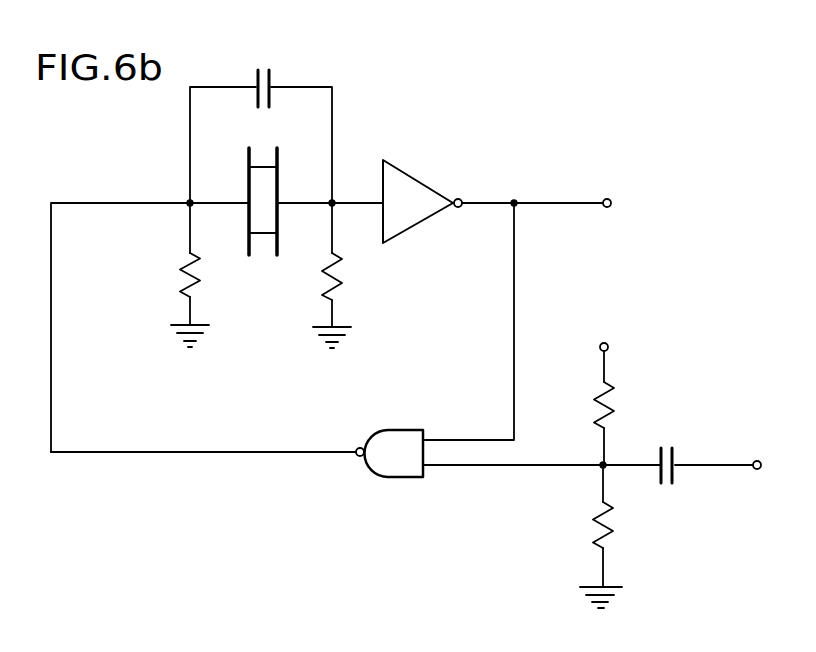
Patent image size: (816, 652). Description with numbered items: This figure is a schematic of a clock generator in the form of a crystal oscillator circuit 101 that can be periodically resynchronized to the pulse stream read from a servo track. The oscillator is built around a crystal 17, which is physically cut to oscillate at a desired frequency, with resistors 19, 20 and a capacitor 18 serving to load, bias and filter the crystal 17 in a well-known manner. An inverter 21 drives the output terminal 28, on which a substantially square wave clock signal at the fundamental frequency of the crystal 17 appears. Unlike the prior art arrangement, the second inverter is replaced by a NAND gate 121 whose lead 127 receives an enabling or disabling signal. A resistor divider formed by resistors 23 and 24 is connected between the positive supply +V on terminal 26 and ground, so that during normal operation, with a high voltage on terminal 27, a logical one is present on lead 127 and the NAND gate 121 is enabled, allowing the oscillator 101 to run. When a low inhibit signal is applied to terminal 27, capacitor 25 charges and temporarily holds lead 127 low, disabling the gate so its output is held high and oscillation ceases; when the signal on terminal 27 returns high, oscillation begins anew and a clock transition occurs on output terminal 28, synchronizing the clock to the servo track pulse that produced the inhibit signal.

The crystal oscillator circuit 101 is at (178, 461).
The crystal 17 is at (265, 237).
The capacitor 18 is at (271, 80).
The resistor 19 is at (186, 258).
The resistor 20 is at (338, 259).
The inverter 21 is at (418, 179).
The output terminal 28 is at (606, 198).
The NAND gate 121 is at (380, 478).
The lead 127 is at (505, 467).
The terminal 26 is at (609, 347).
The resistor 23 is at (610, 405).
The resistor 24 is at (610, 526).
The capacitor 25 is at (674, 476).
The terminal 27 is at (755, 460).